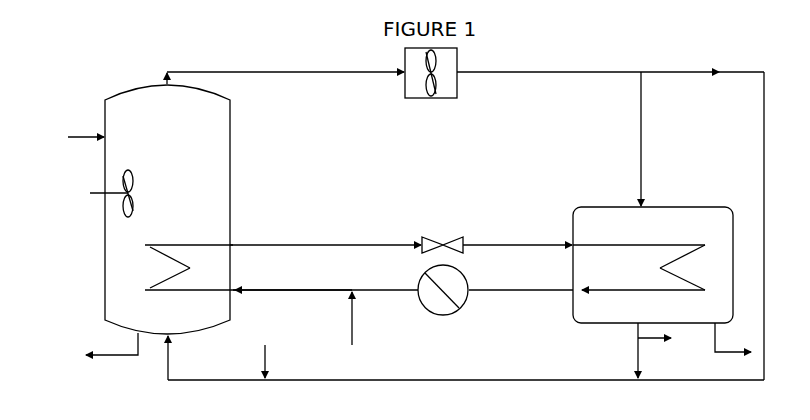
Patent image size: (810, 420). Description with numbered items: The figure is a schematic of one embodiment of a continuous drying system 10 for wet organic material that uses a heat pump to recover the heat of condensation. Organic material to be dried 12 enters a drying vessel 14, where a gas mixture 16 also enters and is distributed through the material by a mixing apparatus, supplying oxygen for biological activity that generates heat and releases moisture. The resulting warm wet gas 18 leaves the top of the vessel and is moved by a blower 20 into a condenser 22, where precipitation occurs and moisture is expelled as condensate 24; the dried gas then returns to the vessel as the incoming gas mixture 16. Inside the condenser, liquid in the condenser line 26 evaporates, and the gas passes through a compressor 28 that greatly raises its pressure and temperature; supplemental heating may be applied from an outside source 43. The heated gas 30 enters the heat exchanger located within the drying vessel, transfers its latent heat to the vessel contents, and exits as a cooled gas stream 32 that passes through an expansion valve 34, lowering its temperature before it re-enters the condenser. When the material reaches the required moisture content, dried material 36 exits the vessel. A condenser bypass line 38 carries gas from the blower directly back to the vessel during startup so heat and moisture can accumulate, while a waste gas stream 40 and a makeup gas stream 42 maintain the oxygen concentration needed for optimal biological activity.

The continuous drying system 10 is at (77, 78).
The organic material to be dried 12 is at (76, 139).
The drying vessel 14 is at (167, 209).
The gas mixture 16 is at (466, 358).
The warm wet gas 18 is at (283, 71).
The blower 20 is at (430, 84).
The condenser 22 is at (653, 265).
The condensate 24 is at (722, 348).
The condenser line 26 is at (639, 267).
The compressor 28 is at (404, 300).
The heated gas 30 is at (292, 297).
The cooled gas stream 32 is at (177, 260).
The expansion valve 34 is at (401, 234).
The dried material 36 is at (106, 363).
The condenser bypass line 38 is at (610, 226).
The waste gas stream 40 is at (663, 344).
The makeup gas stream 42 is at (297, 361).
The outside source 43 is at (399, 324).